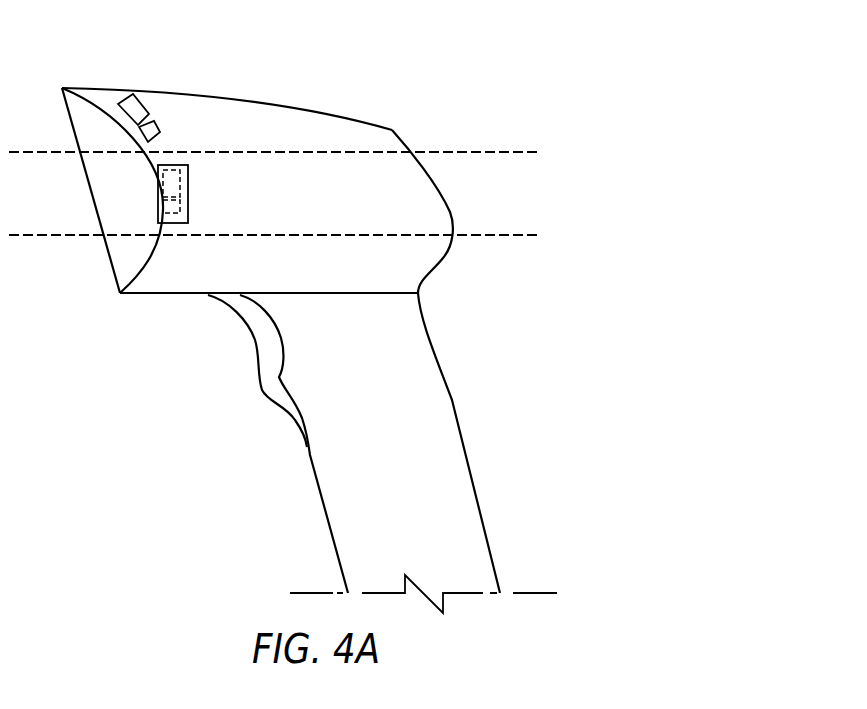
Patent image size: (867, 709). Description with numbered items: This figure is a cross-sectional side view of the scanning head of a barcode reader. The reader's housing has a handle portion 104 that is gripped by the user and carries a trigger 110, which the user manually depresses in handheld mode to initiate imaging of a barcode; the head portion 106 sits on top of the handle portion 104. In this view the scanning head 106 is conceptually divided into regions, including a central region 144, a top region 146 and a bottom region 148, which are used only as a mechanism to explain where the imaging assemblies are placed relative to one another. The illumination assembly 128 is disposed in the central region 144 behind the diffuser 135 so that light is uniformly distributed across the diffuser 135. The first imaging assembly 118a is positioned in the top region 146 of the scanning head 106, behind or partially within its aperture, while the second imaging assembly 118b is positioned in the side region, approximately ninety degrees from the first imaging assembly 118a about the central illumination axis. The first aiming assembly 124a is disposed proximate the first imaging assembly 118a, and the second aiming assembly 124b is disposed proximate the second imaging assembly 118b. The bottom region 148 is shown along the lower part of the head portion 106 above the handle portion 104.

The handle portion 104 is at (445, 415).
The head portion 106 is at (258, 100).
The trigger 110 is at (262, 337).
The first imaging assembly 118a is at (135, 103).
The second imaging assembly 118b is at (172, 183).
The first aiming assembly 124a is at (158, 128).
The second aiming assembly 124b is at (172, 212).
The illumination assembly 128 is at (190, 165).
The diffuser 135 is at (148, 263).
The central region 144 is at (398, 190).
The top region 146 is at (343, 138).
The bottom region 148 is at (300, 272).